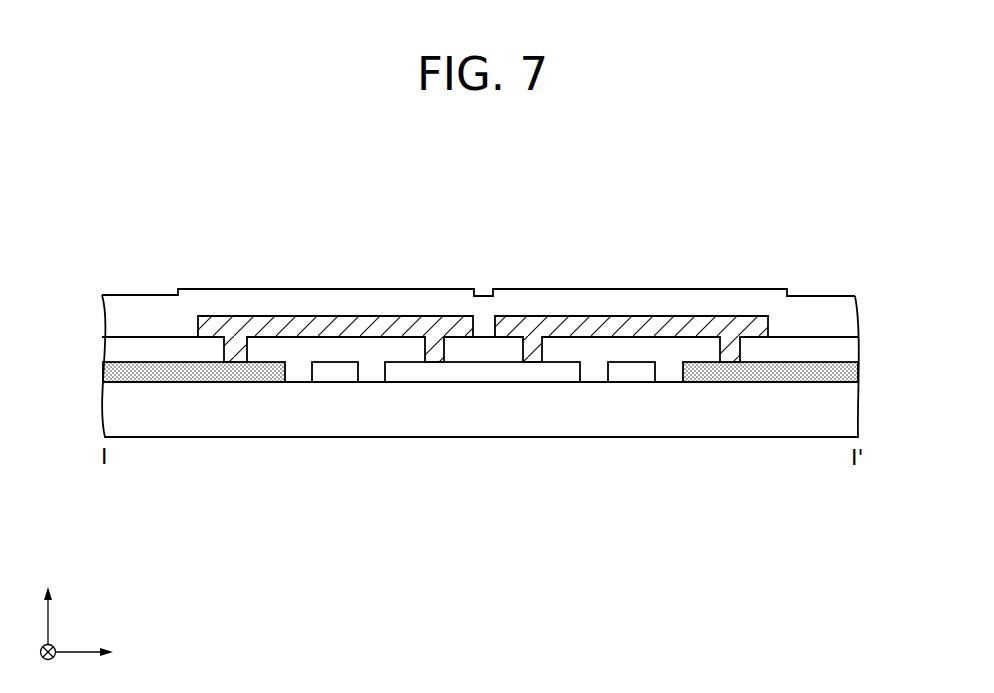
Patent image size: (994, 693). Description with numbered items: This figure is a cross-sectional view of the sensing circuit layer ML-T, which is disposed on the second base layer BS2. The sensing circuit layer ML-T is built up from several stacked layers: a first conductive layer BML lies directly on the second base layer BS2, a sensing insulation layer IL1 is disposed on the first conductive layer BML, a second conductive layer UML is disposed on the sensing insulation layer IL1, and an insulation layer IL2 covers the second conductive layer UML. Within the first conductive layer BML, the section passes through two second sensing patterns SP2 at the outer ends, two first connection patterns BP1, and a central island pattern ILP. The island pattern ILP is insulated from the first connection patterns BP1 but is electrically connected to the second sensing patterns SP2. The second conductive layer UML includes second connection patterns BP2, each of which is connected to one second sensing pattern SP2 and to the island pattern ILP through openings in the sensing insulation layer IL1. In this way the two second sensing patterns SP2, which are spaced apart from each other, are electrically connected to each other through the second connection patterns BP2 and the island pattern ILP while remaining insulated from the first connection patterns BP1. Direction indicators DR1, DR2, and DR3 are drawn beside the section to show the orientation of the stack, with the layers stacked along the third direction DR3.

The second conductive layer UML is at (658, 225).
The second connection pattern BP2 is at (338, 327).
The insulation layer IL2 is at (115, 315).
The sensing insulation layer IL1 is at (115, 348).
The sensing circuit layer ML-T is at (872, 295).
The second base layer BS2 is at (845, 413).
The second sensing pattern SP2 is at (185, 377).
The first connection pattern BP1 is at (335, 373).
The island pattern ILP is at (478, 373).
The first conductive layer BML is at (815, 505).
The first direction DR1 is at (104, 653).
The second direction DR2 is at (47, 668).
The third direction DR3 is at (47, 604).